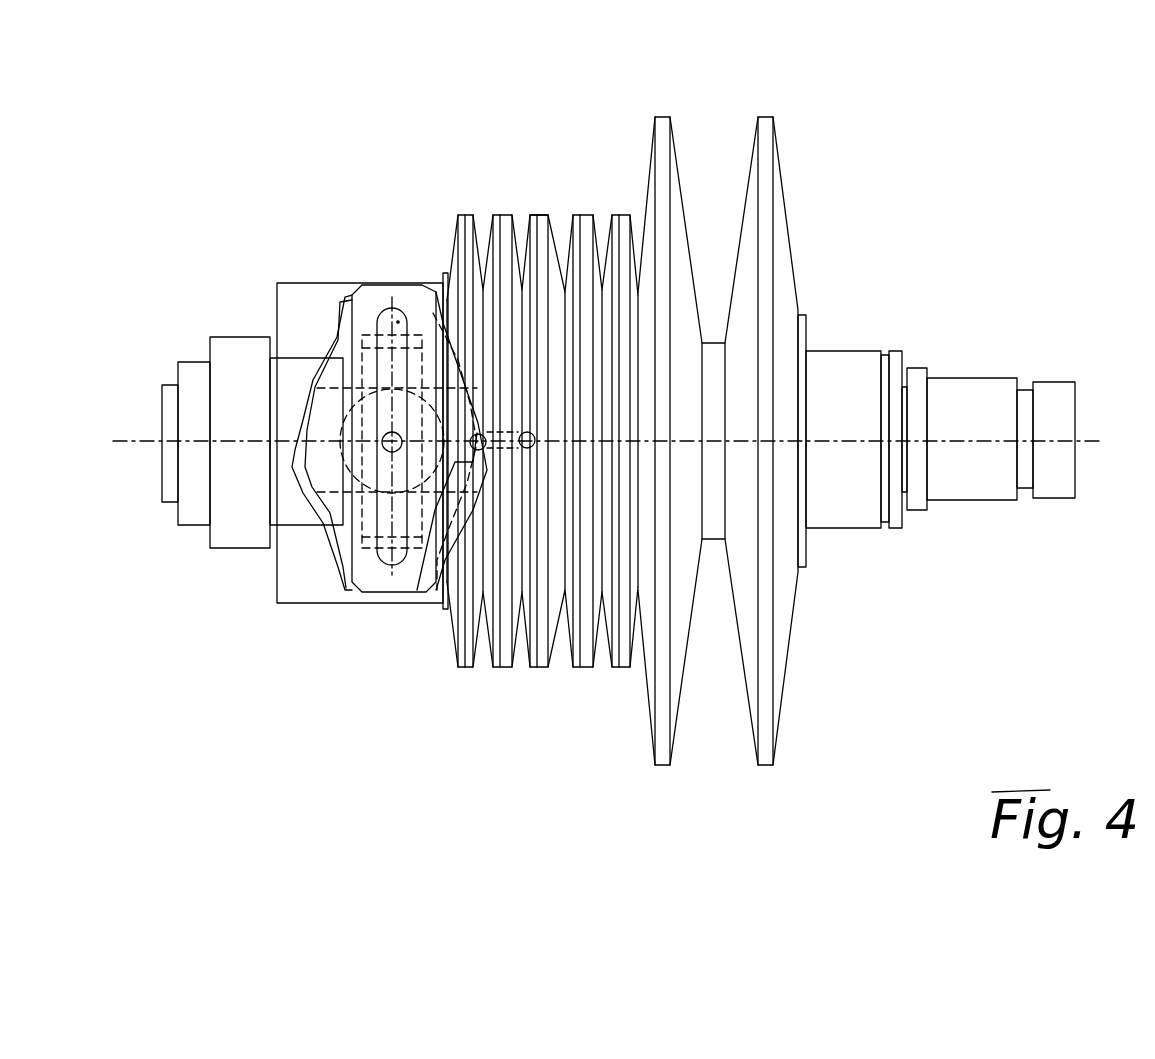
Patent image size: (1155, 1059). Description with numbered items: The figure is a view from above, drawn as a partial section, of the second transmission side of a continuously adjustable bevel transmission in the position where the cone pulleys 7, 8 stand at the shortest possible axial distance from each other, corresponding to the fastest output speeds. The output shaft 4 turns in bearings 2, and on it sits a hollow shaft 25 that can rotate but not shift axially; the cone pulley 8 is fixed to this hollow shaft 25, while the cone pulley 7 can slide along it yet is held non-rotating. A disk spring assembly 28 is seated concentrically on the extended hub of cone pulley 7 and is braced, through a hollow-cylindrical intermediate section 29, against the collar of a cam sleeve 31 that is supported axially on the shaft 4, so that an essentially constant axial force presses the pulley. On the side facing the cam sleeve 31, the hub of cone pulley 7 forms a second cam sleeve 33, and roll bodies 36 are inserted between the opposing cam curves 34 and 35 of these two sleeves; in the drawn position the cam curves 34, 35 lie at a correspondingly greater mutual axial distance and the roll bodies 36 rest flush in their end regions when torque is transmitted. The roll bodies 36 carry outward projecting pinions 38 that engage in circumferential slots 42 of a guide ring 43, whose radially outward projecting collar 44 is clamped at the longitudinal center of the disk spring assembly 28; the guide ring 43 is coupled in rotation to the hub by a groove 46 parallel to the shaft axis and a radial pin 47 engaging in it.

The bearing 2 is at (228, 523).
The shaft 4 is at (963, 390).
The cone pulley 7 is at (663, 117).
The cone pulley 8 is at (770, 140).
The hollow shaft 25 is at (842, 507).
The disk spring assembly 28 is at (462, 213).
The hollow-cylindrical intermediate section 29 is at (308, 578).
The cam sleeve 31 is at (330, 345).
The cam sleeve 33 is at (484, 450).
The cam curve 34 is at (312, 483).
The cam curve 35 is at (470, 430).
The roll body 36 is at (335, 450).
The outward projecting pinion 38 is at (387, 436).
The circumferential slot 42 is at (385, 318).
The guide ring 43 is at (350, 297).
The radially outward projecting collar 44 is at (546, 213).
The groove 46 is at (490, 447).
The radial pin 47 is at (530, 447).